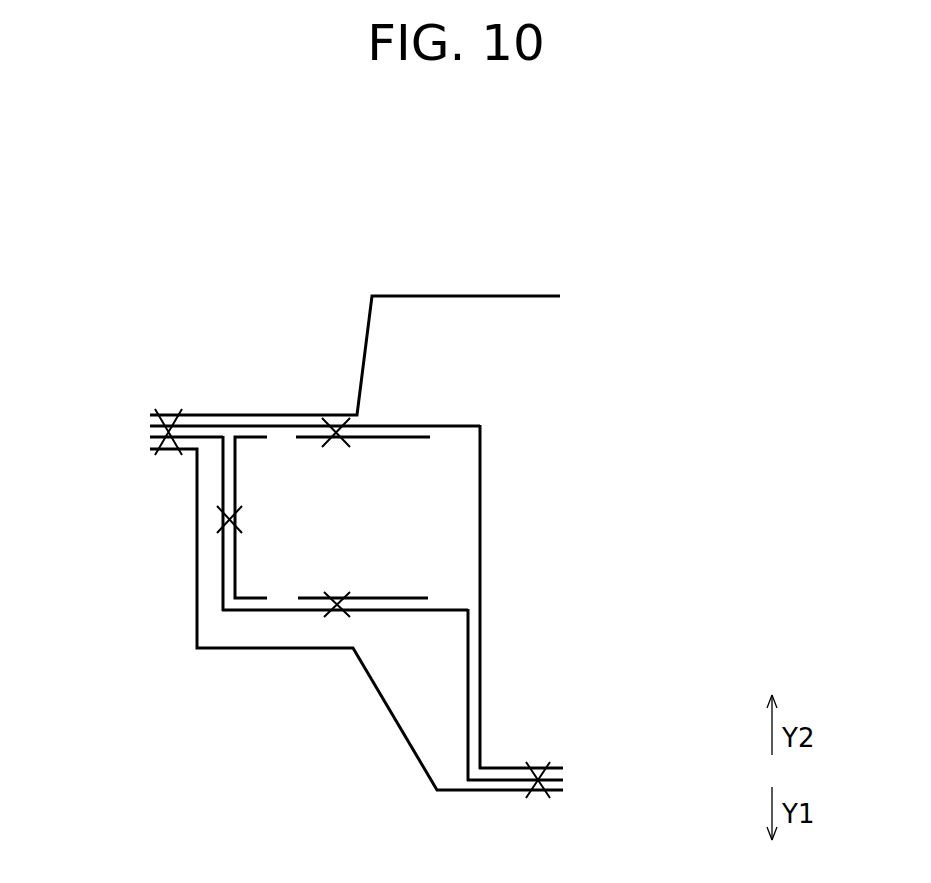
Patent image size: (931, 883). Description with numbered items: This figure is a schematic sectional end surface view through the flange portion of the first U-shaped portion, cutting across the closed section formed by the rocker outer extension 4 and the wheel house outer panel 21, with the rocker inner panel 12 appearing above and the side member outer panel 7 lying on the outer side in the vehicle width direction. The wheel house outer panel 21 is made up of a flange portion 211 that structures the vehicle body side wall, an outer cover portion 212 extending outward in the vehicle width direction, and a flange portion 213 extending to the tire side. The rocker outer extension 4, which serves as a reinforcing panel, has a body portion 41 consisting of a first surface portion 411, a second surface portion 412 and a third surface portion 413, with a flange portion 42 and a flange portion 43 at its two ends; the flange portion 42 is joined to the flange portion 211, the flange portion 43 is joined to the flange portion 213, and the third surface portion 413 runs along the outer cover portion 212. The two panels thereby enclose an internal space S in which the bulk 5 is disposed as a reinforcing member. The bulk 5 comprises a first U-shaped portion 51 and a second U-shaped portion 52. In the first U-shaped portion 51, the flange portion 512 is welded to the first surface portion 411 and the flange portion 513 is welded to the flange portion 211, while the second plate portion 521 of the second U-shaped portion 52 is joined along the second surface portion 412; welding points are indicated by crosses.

The rocker inner panel 12 is at (533, 295).
The wheel house outer panel 21 is at (366, 561).
The flange portion 211 is at (460, 425).
The outer cover portion 212 is at (482, 557).
The flange portion 213 is at (508, 767).
The internal space S is at (452, 462).
The rocker outer extension 4 is at (326, 597).
The body portion 41 is at (281, 653).
The first surface portion 411 is at (247, 613).
The second surface portion 412 is at (223, 565).
The third surface portion 413 is at (468, 748).
The flange portion 42 is at (210, 437).
The flange portion 43 is at (511, 782).
The side member outer panel 7 is at (214, 650).
The bulk 5 is at (241, 522).
The first U-shaped portion 51 is at (340, 522).
The flange portion 512 is at (307, 600).
The flange portion 513 is at (305, 437).
The second U-shaped portion 52 is at (160, 517).
The second plate portion 521 is at (235, 480).